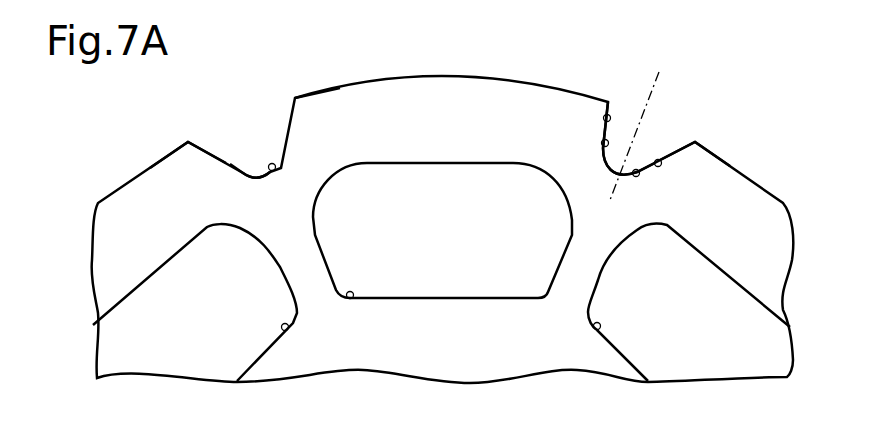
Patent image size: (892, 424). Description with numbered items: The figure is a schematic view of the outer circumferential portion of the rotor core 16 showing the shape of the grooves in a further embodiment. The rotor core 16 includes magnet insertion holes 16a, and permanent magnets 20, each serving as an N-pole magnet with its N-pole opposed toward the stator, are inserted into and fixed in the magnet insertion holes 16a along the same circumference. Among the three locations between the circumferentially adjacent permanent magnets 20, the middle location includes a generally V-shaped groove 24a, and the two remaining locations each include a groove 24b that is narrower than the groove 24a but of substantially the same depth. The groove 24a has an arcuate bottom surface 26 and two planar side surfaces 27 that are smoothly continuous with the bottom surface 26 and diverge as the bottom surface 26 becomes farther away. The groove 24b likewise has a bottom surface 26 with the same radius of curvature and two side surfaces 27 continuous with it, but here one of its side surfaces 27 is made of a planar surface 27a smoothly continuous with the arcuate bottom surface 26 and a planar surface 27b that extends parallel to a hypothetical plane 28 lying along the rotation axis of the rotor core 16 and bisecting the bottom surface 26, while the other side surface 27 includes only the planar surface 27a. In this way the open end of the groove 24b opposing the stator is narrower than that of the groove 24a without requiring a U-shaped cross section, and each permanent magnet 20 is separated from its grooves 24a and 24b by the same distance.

The rotor core 16 is at (746, 172).
The magnet insertion hole 16a is at (288, 328).
The permanent magnet 20 is at (260, 345).
The groove 24a is at (248, 137).
The groove 24b is at (657, 145).
The bottom surface 26 is at (275, 168).
The side surface 27 is at (196, 147).
The planar surface 27a is at (600, 144).
The planar surface 27b is at (603, 120).
The hypothetical plane 28 is at (659, 72).